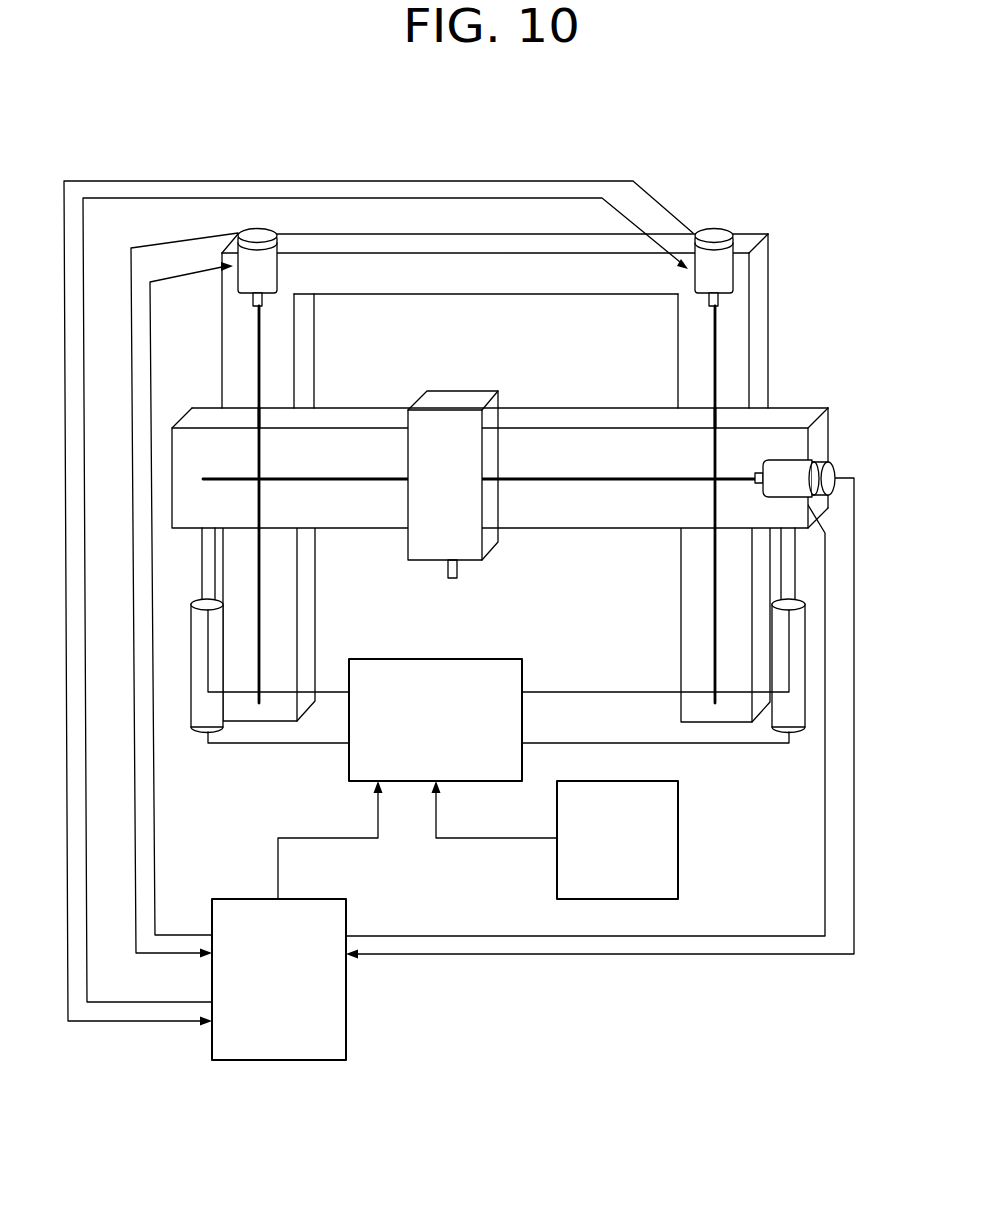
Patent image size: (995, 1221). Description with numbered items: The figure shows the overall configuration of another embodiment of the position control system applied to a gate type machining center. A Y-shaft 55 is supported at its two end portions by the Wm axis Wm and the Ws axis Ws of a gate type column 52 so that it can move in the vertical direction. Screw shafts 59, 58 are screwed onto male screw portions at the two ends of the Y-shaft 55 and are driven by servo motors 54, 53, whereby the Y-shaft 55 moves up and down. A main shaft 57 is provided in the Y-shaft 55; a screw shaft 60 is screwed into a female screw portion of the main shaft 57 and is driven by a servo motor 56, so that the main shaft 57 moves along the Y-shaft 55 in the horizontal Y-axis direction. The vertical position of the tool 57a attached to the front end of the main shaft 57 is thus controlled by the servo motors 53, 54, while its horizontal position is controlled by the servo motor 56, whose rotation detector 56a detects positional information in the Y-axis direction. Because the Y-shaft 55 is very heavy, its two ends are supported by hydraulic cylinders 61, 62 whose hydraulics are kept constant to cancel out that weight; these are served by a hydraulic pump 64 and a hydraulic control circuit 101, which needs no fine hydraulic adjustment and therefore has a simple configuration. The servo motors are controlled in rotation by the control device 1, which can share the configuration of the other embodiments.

The control device 1 is at (346, 1027).
The gate type column 52 is at (433, 268).
The servo motor 53 is at (722, 265).
The servo motor 54 is at (270, 272).
The Y-shaft 55 is at (583, 442).
The servo motor 56 is at (785, 462).
The rotation detector 56a is at (830, 462).
The main shaft 57 is at (457, 420).
The tool 57a is at (458, 572).
The screw shaft 58 is at (718, 340).
The screw shaft 59 is at (258, 340).
The screw shaft 60 is at (608, 481).
The hydraulic cylinder 61 is at (797, 725).
The hydraulic cylinder 62 is at (197, 728).
The hydraulic pump 64 is at (678, 823).
The hydraulic control circuit 101 is at (522, 659).
The Wm axis Wm is at (285, 360).
The Ws axis Ws is at (678, 330).